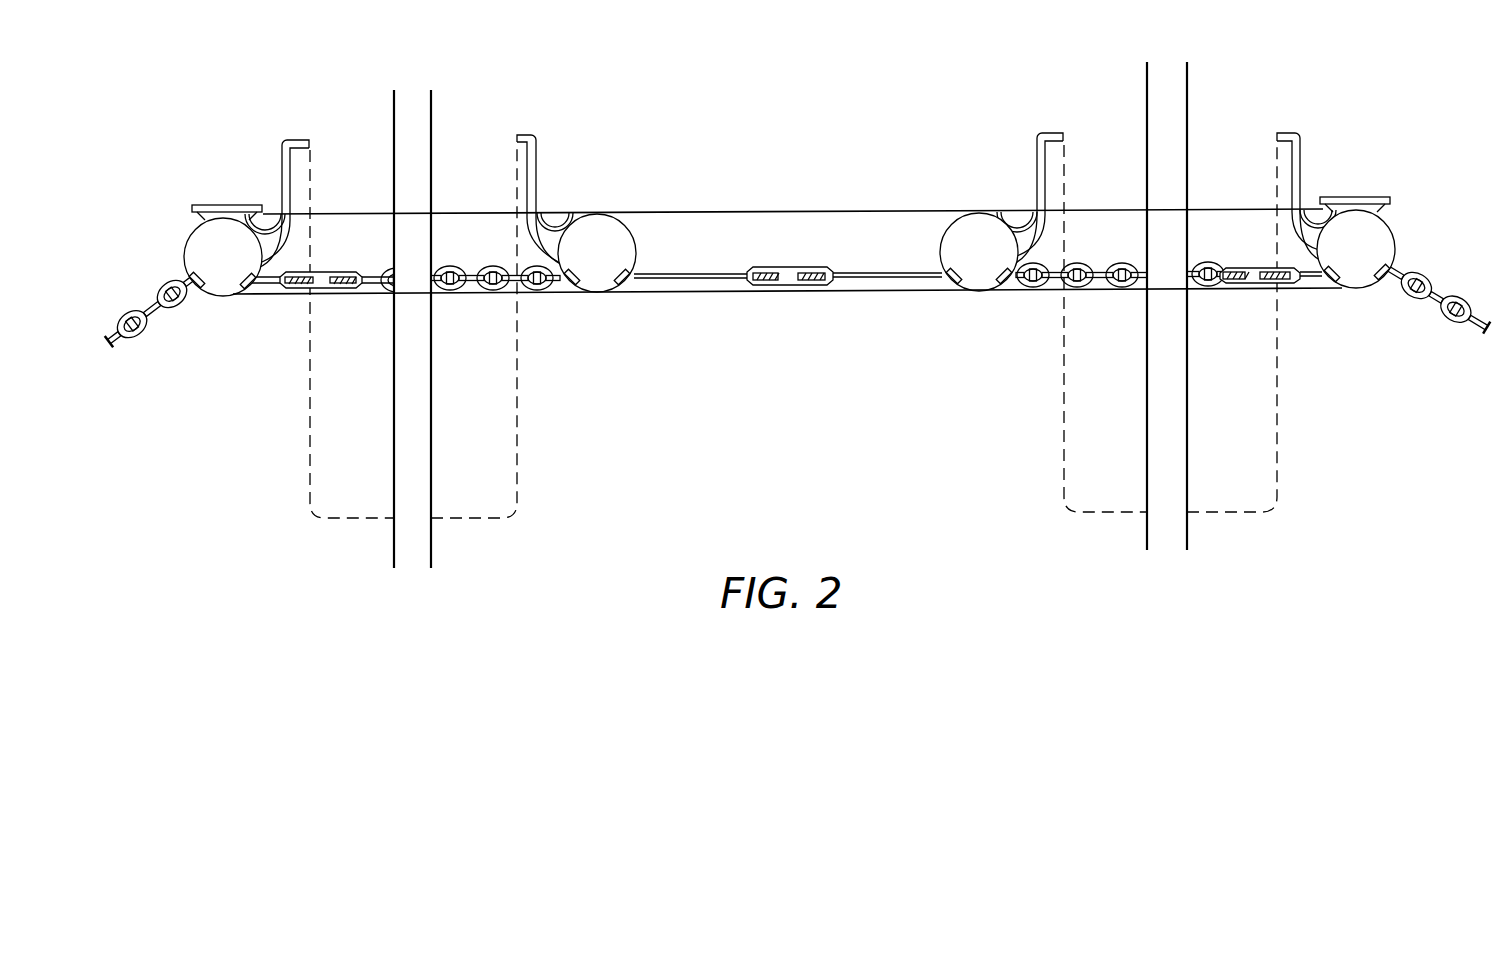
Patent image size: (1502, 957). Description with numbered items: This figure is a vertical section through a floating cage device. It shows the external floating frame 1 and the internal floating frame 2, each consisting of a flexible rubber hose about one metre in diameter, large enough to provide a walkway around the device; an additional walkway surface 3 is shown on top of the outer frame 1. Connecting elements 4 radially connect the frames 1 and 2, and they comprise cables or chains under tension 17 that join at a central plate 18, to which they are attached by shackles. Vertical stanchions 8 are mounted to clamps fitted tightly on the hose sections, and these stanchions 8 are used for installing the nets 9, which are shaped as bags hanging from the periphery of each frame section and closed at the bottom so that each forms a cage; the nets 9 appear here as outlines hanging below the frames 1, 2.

The external floating frame 1 is at (208, 312).
The internal floating frame 2 is at (597, 312).
The walkway surface 3 is at (207, 205).
The connecting elements 4 is at (537, 293).
The vertical stanchions 8 is at (300, 140).
The nets 9 is at (315, 510).
The cables or chains under tension 17 is at (687, 280).
The central plate 18 is at (790, 268).